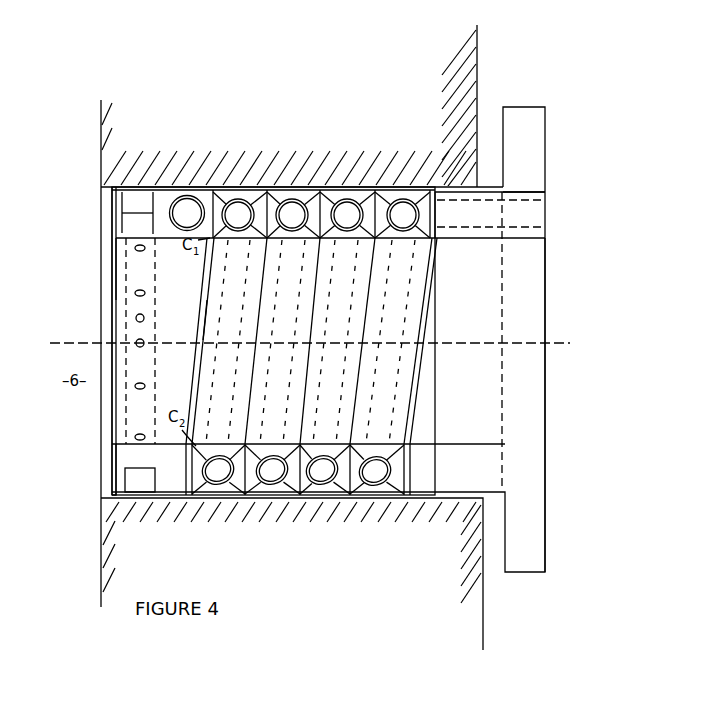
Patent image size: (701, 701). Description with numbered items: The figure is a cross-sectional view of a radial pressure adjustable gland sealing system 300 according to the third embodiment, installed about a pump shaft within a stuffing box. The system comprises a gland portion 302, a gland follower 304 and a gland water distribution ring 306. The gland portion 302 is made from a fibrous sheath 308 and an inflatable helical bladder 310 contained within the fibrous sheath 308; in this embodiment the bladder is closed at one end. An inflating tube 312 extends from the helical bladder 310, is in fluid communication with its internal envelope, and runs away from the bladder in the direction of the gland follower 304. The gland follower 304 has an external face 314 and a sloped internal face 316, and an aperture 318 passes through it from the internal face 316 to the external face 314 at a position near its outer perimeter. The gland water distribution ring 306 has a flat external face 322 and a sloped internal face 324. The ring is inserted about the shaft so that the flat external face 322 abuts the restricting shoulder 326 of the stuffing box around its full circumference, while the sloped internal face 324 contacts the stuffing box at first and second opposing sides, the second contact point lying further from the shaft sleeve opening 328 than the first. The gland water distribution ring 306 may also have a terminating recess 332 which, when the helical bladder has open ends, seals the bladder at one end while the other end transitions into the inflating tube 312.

The radial pressure adjustable gland sealing system 300 is at (260, 337).
The gland portion 302 is at (299, 339).
The gland follower 304 is at (550, 258).
The gland water distribution ring 306 is at (115, 304).
The fibrous sheath 308 is at (385, 187).
The inflatable helical bladder 310 is at (392, 402).
The inflating tube 312 is at (540, 216).
The external face 314 is at (547, 356).
The internal face 316 is at (424, 325).
The aperture 318 is at (548, 205).
The external face 322 is at (118, 258).
The internal face 324 is at (200, 337).
The restricting shoulder 326 is at (110, 476).
The shaft sleeve opening 328 is at (553, 381).
The terminating recess 332 is at (142, 384).